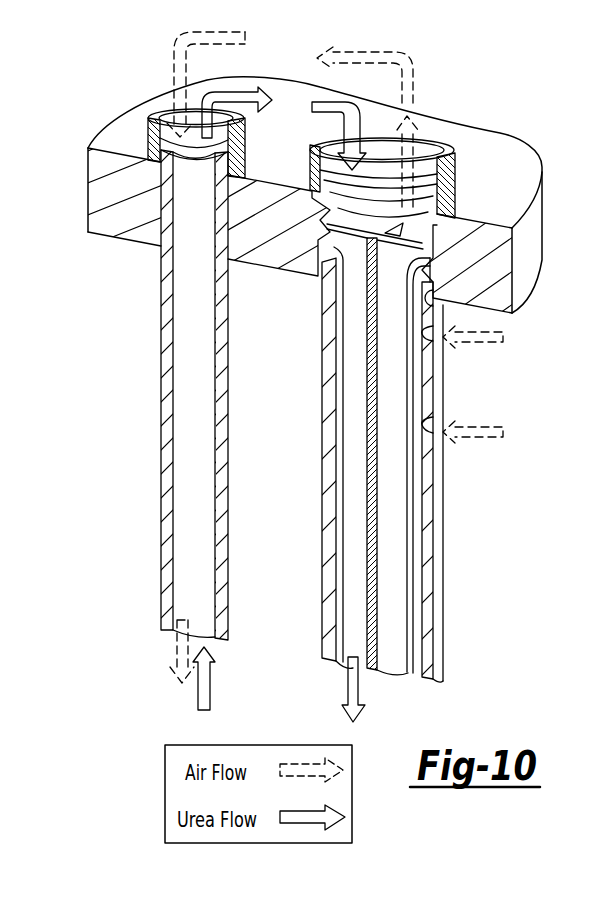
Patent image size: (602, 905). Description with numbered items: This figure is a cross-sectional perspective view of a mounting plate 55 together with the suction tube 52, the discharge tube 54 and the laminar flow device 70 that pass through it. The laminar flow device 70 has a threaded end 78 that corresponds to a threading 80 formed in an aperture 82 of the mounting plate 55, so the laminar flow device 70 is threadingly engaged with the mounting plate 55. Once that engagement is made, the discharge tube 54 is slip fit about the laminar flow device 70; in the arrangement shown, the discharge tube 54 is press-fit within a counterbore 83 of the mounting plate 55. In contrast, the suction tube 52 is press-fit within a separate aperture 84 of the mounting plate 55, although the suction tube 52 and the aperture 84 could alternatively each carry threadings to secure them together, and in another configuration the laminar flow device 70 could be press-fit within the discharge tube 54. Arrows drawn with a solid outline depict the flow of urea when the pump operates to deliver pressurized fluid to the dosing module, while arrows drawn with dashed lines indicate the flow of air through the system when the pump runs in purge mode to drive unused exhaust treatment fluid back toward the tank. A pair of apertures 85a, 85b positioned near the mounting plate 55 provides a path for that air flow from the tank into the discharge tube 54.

The suction tube 52 is at (161, 490).
The discharge tube 54 is at (322, 452).
The mounting plate 55 is at (129, 120).
The laminar flow device 70 is at (397, 660).
The threaded end 78 is at (343, 247).
The threading 80 is at (420, 258).
The aperture 82 is at (512, 228).
The counterbore 83 is at (437, 317).
The aperture 84 is at (163, 226).
The aperture 85a is at (437, 334).
The aperture 85b is at (433, 428).